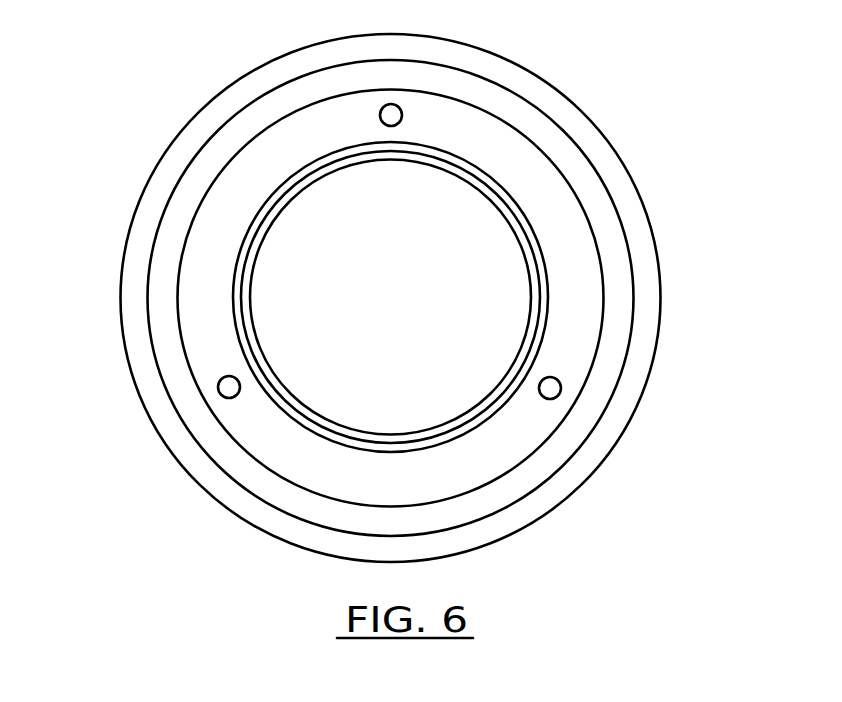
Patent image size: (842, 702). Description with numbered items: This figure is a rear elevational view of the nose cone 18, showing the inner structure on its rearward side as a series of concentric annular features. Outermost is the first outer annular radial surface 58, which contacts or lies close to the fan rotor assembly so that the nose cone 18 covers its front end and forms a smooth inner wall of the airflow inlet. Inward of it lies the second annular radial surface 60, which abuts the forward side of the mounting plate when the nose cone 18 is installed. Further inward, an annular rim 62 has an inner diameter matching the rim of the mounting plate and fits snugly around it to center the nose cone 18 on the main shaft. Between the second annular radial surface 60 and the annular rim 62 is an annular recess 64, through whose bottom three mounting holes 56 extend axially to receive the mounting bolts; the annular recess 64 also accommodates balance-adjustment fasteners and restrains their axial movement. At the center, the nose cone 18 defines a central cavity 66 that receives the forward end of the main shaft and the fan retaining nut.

The nose cone 18 is at (627, 172).
The mounting hole 56 is at (393, 104).
The first outer annular radial surface 58 is at (647, 267).
The second annular radial surface 60 is at (618, 321).
The annular rim 62 is at (546, 337).
The annular recess 64 is at (210, 250).
The central cavity 66 is at (419, 314).